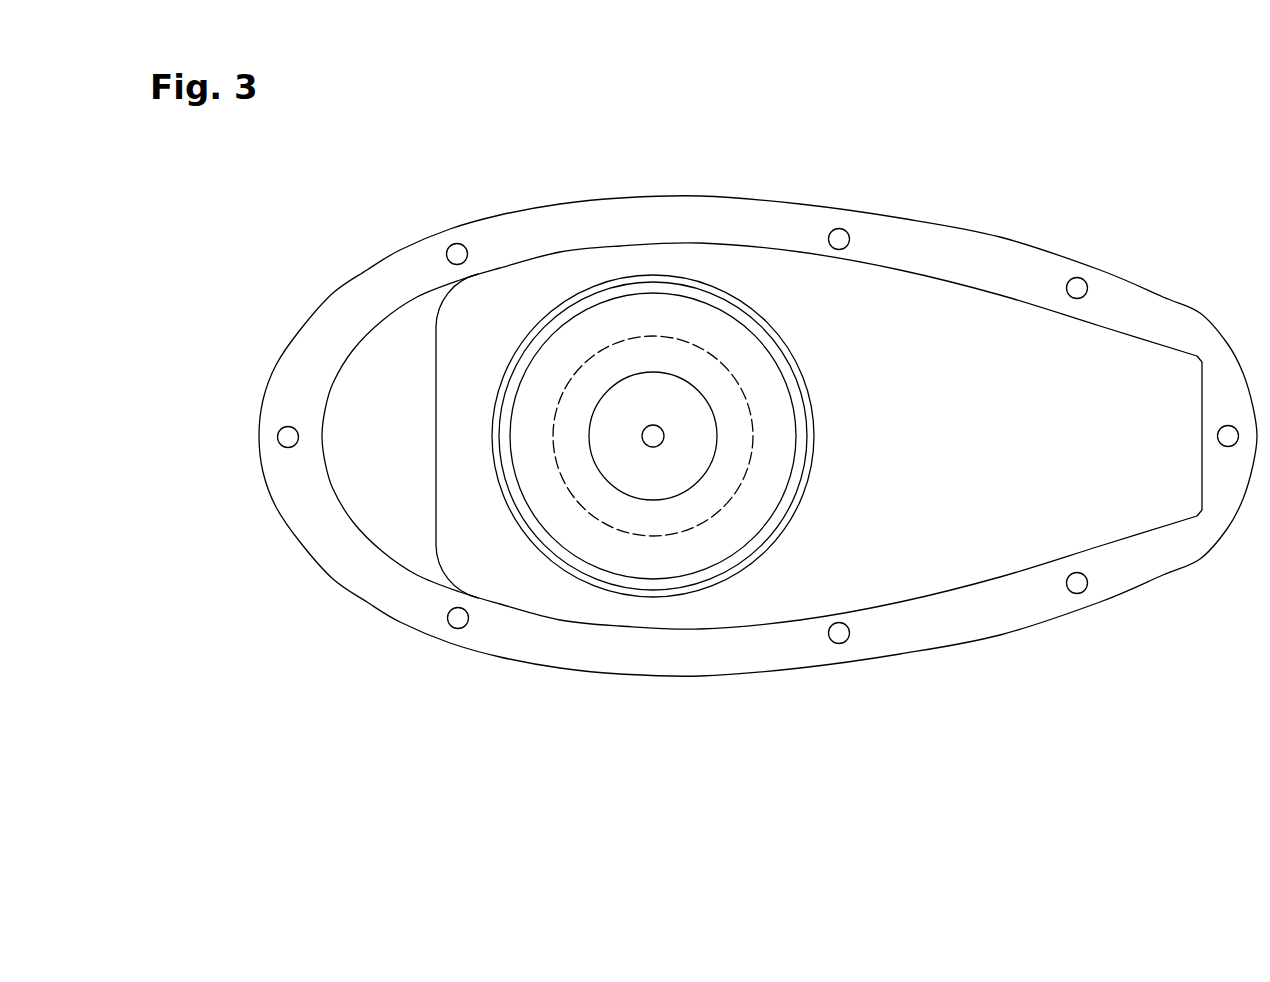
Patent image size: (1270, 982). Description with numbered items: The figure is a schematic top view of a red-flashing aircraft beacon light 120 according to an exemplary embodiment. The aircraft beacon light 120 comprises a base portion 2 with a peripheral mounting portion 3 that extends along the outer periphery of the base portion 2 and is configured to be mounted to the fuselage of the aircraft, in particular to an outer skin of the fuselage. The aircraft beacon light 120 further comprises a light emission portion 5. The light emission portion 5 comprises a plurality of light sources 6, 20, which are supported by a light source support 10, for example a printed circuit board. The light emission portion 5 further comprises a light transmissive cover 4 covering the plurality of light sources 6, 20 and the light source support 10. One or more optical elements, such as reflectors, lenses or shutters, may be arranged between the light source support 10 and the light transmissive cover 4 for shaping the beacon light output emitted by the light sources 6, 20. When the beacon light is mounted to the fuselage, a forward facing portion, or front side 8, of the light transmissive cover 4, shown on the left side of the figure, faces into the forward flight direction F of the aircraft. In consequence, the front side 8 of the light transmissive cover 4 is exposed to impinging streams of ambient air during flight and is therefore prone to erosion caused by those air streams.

The aircraft beacon light 120 is at (921, 189).
The base portion 2 is at (1000, 312).
The peripheral mounting portion 3 is at (1150, 313).
The light transmissive cover 4 is at (717, 285).
The light emission portion 5 is at (585, 287).
The light source 6 is at (603, 340).
The light source support 10 is at (658, 310).
The front side 8 is at (498, 382).
The light source 20 is at (554, 414).
The forward flight direction F is at (222, 386).